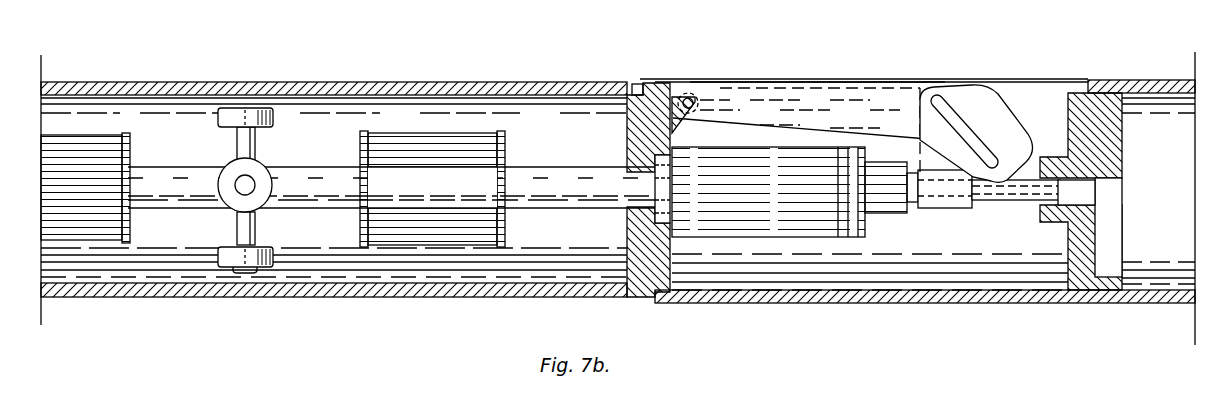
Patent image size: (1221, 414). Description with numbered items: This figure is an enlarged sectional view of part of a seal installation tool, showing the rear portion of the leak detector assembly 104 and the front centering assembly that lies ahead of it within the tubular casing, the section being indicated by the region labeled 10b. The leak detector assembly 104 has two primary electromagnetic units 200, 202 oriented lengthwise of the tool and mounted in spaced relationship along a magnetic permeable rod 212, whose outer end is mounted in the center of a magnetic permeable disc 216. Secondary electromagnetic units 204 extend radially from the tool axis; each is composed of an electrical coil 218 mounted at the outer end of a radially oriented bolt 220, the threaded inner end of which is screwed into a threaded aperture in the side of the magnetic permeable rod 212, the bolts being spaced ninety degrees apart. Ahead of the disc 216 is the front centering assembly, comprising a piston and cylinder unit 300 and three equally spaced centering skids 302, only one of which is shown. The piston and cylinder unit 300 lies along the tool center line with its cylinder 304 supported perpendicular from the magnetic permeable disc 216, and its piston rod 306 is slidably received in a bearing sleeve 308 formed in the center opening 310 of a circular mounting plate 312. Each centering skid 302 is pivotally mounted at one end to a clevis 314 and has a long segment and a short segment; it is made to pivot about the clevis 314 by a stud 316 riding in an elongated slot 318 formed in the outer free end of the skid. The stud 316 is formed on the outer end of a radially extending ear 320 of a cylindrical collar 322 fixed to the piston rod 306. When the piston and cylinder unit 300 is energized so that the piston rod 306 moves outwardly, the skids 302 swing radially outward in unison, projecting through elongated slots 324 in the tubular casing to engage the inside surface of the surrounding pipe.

The primary electromagnetic unit 200 is at (618, 192).
The leak detector assembly 104 is at (192, 112).
The secondary electromagnetic unit 204 is at (232, 206).
The electrical coil 218 is at (258, 140).
The radially oriented bolt 220 is at (260, 143).
The magnetic permeable rod 212 is at (315, 183).
The primary electromagnetic unit 202 is at (430, 147).
The magnetic permeable disc 216 is at (645, 120).
The cylinder 304 is at (728, 217).
The piston and cylinder unit 300 is at (822, 239).
The cylindrical collar 322 is at (925, 210).
The radially extending ear 320 is at (945, 163).
The piston rod 306 is at (1017, 202).
The centering skid 302 is at (823, 102).
The elongated slot 324 is at (720, 83).
The clevis 314 is at (681, 97).
The elongated slot 318 is at (967, 125).
The stud 316 is at (945, 100).
The actuator section 10b is at (934, 79).
The circular mounting plate 312 is at (1100, 107).
The bearing sleeve 308 is at (1080, 217).
The center opening 310 is at (1080, 173).